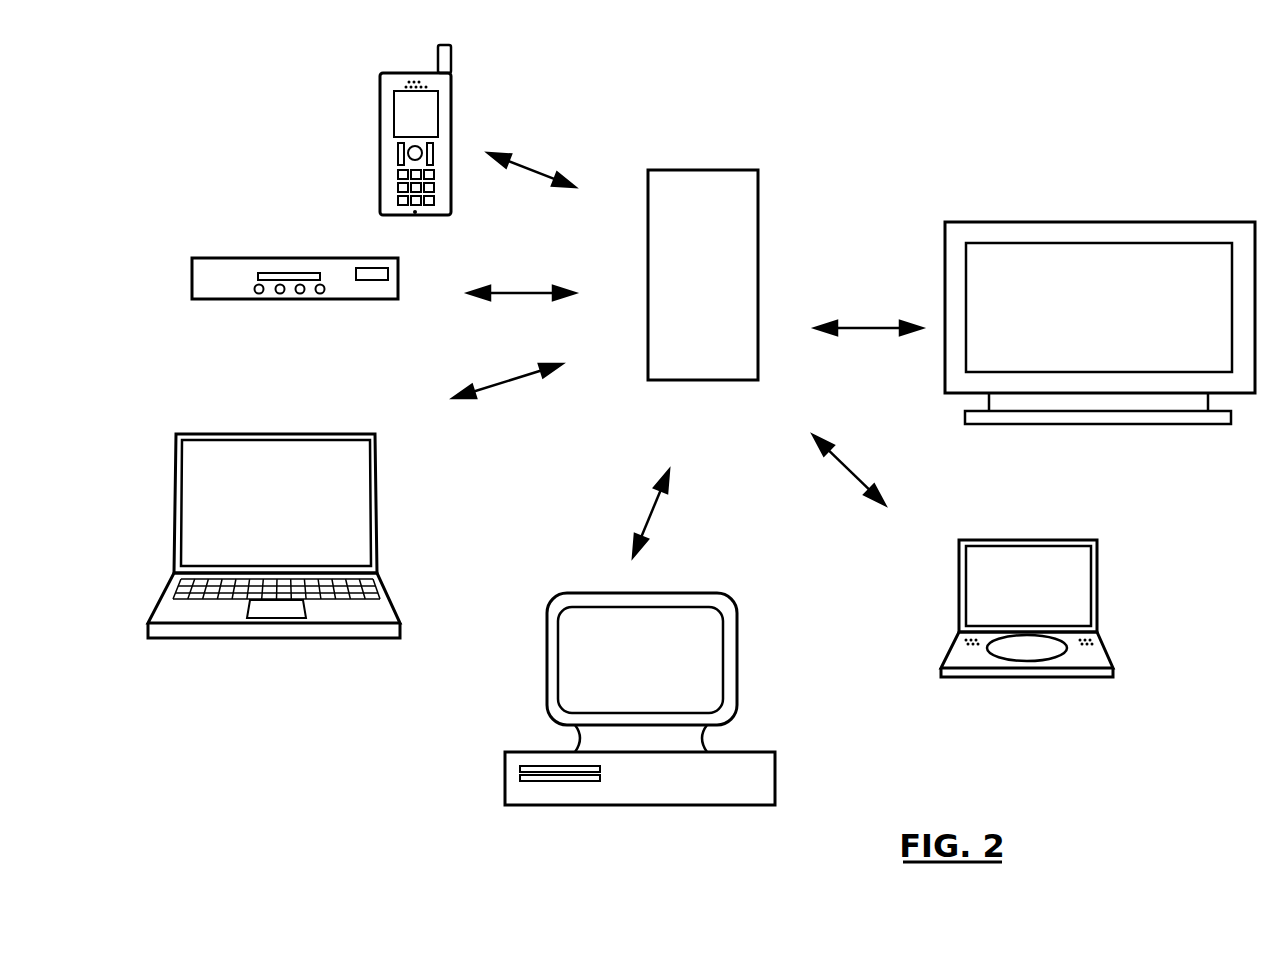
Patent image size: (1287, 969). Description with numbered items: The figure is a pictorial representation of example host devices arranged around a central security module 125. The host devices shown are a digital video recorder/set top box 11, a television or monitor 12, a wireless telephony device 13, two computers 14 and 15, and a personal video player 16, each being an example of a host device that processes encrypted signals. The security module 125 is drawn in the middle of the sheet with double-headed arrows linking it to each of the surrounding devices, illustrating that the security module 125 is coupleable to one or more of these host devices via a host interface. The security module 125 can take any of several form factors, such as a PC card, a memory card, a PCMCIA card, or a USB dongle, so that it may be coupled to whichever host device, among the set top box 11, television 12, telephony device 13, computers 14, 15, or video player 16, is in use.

The security module 125 is at (703, 275).
The digital video recorder/set top box 11 is at (204, 289).
The television or monitor 12 is at (978, 269).
The wireless telephony device 13 is at (403, 129).
The computer 14 is at (205, 479).
The computer 15 is at (580, 647).
The personal video player 16 is at (977, 579).